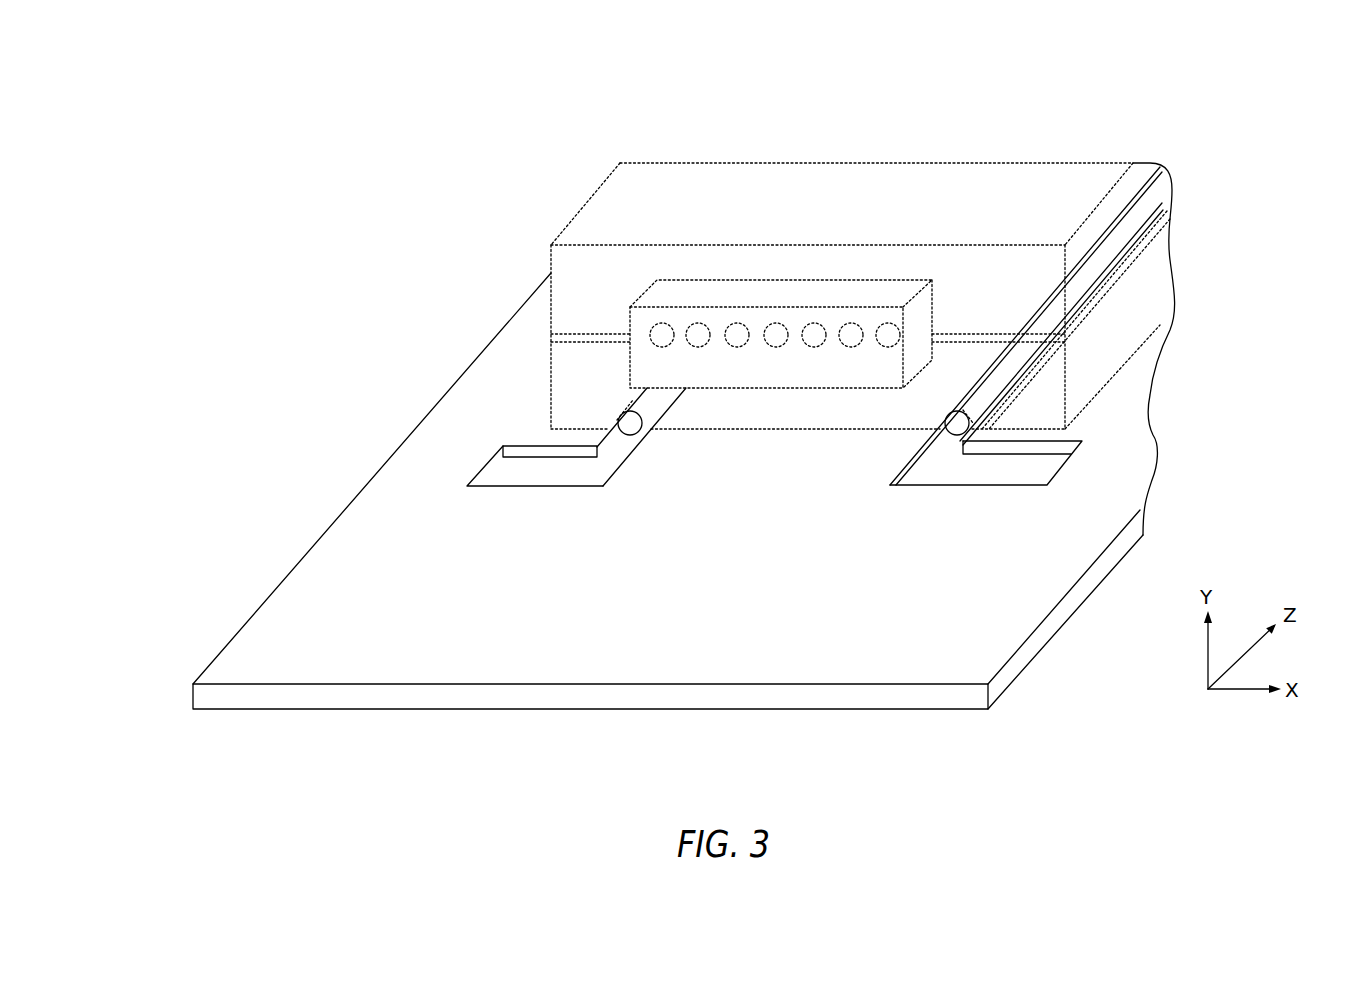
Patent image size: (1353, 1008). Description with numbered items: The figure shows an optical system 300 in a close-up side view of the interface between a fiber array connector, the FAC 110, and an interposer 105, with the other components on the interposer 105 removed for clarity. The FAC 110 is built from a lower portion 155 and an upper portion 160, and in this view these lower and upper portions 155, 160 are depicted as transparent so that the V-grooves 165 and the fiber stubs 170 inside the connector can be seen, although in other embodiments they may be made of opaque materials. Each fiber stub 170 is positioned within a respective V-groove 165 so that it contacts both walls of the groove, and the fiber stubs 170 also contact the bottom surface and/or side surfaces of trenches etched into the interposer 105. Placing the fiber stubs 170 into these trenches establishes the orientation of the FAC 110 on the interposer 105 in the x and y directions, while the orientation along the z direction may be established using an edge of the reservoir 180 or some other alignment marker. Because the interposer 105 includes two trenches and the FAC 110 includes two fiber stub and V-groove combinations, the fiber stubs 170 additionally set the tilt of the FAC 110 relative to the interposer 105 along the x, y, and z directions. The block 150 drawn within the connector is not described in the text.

The optical system 300 is at (355, 108).
The interposer 105 is at (334, 519).
The fiber array connector (FAC) 110 is at (1141, 148).
The upper portion of the FAC 160 is at (578, 212).
The connector block 150 is at (643, 296).
The lower portion of the FAC 155 is at (551, 378).
The V-groove 165 is at (938, 412).
The fiber stub 170 is at (965, 435).
The reservoir 180 is at (1003, 475).